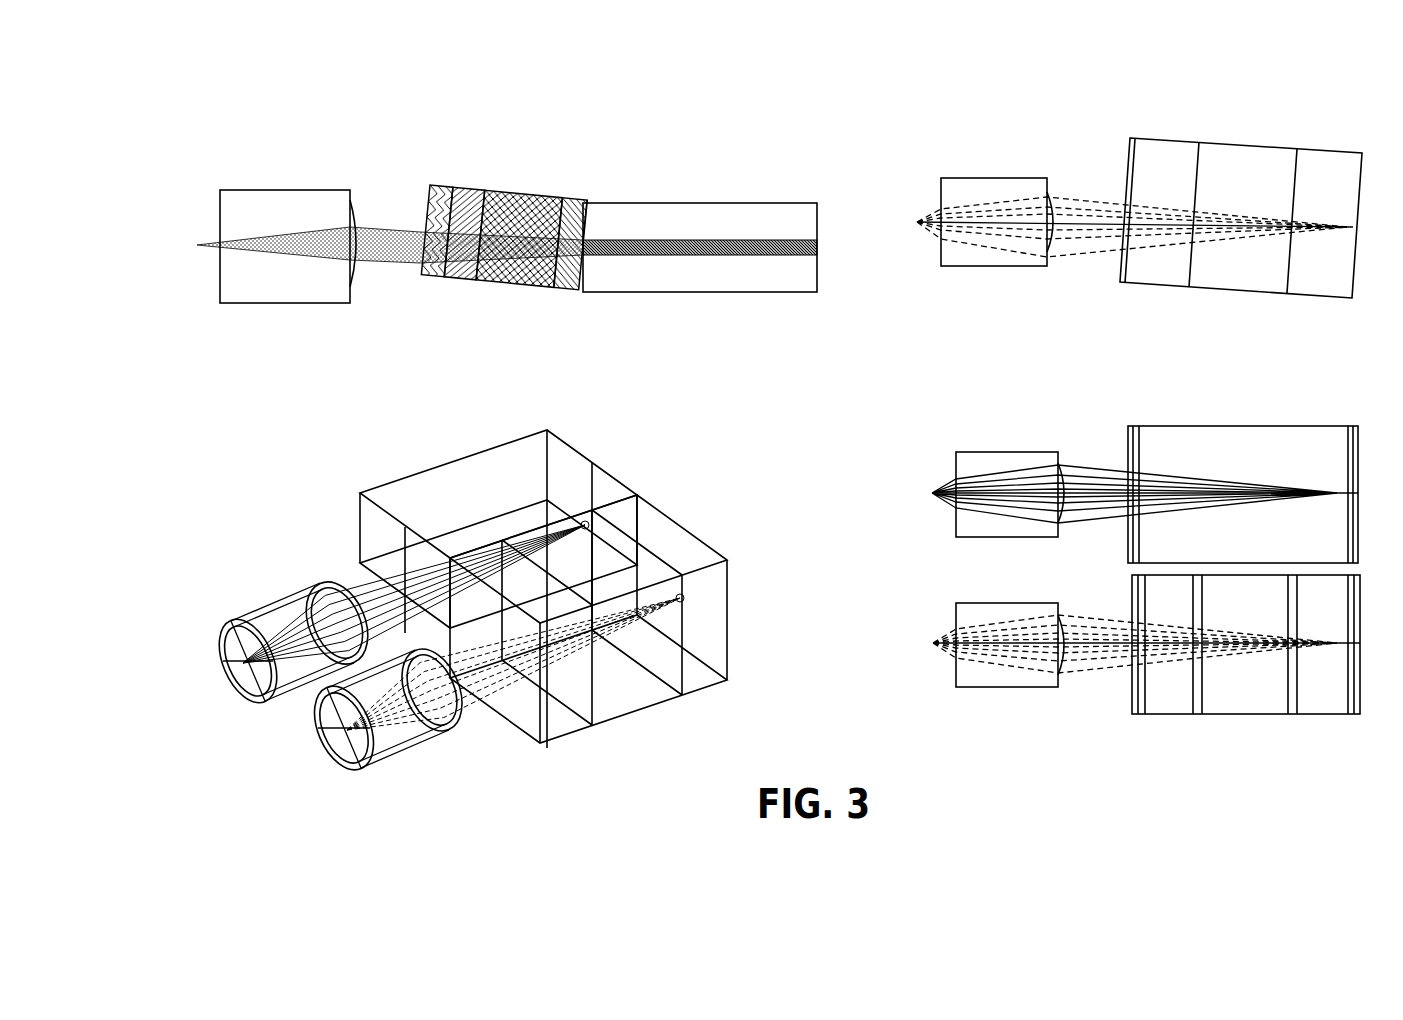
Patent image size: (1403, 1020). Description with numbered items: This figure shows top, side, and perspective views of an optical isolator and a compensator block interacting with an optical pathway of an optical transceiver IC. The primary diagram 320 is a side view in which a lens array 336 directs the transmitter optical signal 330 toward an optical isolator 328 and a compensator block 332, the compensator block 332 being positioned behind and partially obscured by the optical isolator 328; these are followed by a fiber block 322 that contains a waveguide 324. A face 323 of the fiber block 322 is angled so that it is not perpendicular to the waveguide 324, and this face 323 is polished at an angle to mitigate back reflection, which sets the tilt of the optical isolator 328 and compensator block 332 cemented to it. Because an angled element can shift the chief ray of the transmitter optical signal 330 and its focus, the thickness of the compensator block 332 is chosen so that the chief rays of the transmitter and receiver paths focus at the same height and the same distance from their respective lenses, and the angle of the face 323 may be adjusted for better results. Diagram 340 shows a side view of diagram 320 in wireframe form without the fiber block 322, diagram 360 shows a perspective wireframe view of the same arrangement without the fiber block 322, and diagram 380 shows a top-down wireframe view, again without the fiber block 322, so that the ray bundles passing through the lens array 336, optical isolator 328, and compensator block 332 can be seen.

The diagram 320 is at (620, 130).
The fiber block 322 is at (727, 203).
The face 323 is at (592, 227).
The waveguide 324 is at (817, 250).
The optical isolator 328 is at (588, 201).
The transmitter optical signal 330 is at (390, 253).
The compensator block 332 is at (452, 200).
The lens array 336 is at (273, 190).
The diagram 340 is at (1252, 102).
The diagram 360 is at (650, 435).
The diagram 380 is at (1282, 393).